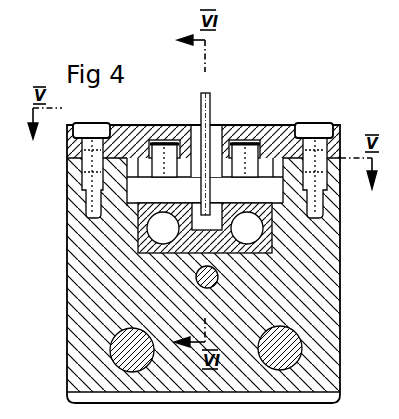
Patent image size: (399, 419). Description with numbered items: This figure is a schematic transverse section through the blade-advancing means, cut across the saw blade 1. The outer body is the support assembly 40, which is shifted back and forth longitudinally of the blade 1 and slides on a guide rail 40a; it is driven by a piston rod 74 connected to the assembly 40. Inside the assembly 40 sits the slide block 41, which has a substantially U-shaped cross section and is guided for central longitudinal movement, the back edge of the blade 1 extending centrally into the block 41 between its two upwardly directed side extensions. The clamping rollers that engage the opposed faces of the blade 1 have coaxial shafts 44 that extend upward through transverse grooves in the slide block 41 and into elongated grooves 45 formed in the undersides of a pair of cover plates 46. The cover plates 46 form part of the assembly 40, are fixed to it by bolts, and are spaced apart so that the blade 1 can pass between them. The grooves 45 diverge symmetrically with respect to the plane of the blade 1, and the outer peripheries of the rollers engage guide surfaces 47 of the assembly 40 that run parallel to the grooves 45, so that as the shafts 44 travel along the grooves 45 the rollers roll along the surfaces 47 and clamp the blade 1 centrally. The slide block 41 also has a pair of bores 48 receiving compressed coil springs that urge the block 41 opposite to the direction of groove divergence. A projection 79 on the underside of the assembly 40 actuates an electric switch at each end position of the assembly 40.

The blade 1 is at (205, 110).
The support assembly 40 is at (68, 285).
The guide rail 40a is at (118, 337).
The slide block 41 is at (266, 250).
The coaxial shafts 44 is at (150, 138).
The elongated grooves 45 is at (158, 148).
The cover plates 46 is at (80, 143).
The guide surfaces 47 is at (130, 208).
The bores 48 is at (247, 238).
The piston rod 74 is at (213, 284).
The projection 79 is at (262, 403).